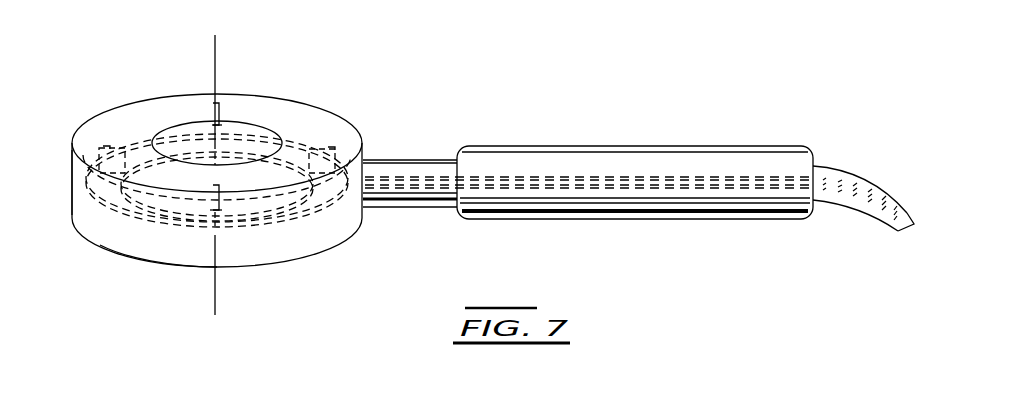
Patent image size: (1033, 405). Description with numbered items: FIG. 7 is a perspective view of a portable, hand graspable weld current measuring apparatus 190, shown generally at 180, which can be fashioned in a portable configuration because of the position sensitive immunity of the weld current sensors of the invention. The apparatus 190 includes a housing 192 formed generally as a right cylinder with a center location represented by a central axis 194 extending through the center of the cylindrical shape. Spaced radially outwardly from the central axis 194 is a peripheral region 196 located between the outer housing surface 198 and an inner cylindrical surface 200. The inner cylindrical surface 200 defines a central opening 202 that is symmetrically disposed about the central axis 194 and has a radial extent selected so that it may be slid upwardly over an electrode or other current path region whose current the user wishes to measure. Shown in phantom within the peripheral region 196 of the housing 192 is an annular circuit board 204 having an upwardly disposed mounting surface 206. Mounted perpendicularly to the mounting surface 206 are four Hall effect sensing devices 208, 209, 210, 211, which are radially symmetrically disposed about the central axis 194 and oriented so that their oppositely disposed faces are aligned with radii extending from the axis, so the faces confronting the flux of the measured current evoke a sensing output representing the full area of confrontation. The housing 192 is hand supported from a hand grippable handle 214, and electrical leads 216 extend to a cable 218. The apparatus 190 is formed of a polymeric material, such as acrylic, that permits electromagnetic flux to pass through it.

The therapy device 180 is at (198, 42).
The portable weld current measuring apparatus 190 is at (212, 207).
The housing 192 is at (128, 88).
The central axis 194 is at (216, 46).
The peripheral region 196 is at (136, 248).
The outer housing surface 198 is at (72, 193).
The inner cylindrical surface 200 is at (182, 137).
The central opening 202 is at (234, 142).
The annular circuit board 204 is at (243, 234).
The mounting surface 206 is at (297, 200).
The Hall effect sensing device 208 is at (107, 146).
The Hall effect sensing device 209 is at (220, 111).
The Hall effect sensing device 210 is at (332, 147).
The Hall effect sensing device 211 is at (212, 212).
The hand grippable handle 214 is at (694, 147).
The electrical leads 216 is at (423, 194).
The cable 218 is at (837, 168).